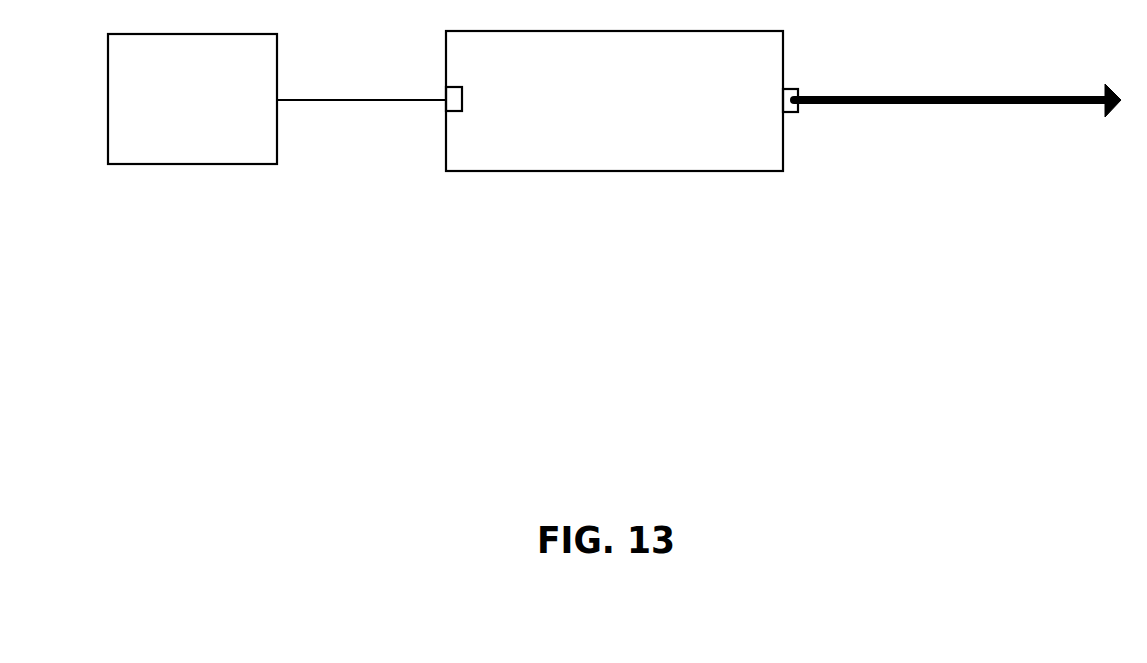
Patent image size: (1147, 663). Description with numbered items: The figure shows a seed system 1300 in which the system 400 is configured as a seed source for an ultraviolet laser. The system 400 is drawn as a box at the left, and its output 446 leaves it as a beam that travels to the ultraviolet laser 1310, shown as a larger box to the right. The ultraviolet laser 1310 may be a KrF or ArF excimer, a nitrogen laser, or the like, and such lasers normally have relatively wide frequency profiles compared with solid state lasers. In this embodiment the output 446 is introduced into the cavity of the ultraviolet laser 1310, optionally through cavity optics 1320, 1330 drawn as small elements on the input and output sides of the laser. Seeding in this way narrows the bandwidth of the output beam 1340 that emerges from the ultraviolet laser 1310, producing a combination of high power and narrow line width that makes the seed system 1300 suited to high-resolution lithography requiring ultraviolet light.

The system 400 is at (190, 165).
The output 446 is at (330, 100).
The seed system 1300 is at (614, 325).
The ultraviolet laser 1310 is at (613, 171).
The cavity optics 1320 is at (446, 111).
The cavity optics 1330 is at (790, 112).
The output beam 1340 is at (905, 104).